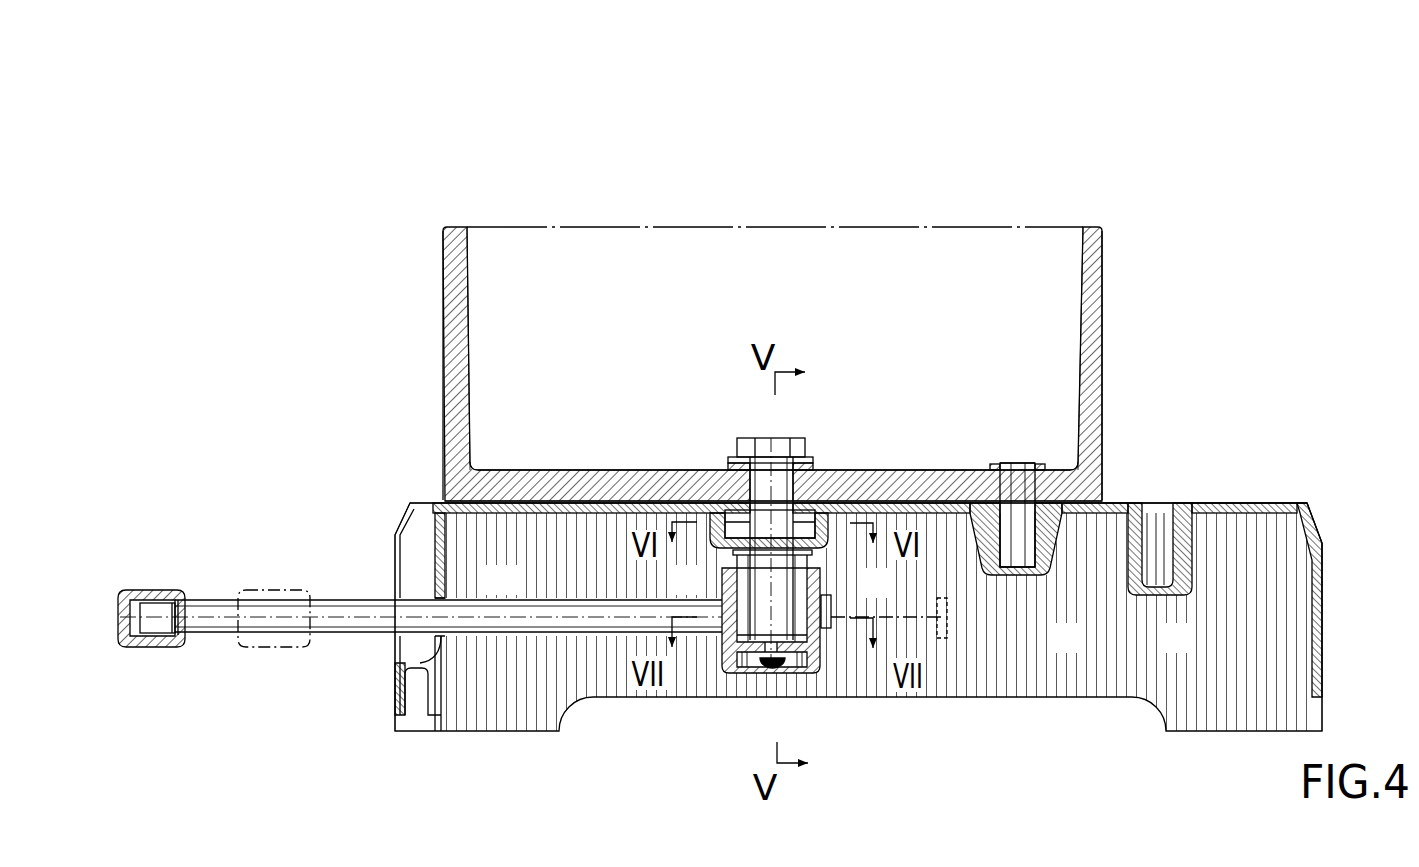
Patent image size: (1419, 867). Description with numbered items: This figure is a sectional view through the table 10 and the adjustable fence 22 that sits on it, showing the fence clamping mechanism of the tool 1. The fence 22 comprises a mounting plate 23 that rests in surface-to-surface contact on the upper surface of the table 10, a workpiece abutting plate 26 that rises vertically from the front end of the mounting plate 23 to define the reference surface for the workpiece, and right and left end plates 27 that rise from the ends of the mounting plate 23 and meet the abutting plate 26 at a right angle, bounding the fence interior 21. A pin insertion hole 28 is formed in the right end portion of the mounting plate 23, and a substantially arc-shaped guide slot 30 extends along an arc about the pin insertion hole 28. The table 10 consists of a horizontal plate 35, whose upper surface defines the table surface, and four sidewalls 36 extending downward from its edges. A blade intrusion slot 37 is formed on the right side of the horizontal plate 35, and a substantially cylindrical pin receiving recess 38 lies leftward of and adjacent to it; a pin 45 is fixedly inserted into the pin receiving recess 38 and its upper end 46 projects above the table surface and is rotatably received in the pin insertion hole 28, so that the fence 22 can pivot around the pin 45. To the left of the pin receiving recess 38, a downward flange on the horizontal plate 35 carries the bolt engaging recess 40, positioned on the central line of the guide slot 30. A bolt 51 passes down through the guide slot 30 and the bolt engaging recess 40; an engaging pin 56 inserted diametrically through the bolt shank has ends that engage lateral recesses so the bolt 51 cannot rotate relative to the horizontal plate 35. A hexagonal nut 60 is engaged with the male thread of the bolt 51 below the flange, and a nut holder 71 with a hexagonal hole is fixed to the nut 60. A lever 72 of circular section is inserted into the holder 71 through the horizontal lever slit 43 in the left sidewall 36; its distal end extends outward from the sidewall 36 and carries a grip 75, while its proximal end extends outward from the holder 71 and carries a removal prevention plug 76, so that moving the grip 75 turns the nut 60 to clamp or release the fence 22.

The apparatus 1 is at (1322, 438).
The table 10 is at (1325, 535).
The container interior 21 is at (1130, 392).
The adjustable fence 22 is at (1103, 272).
The mounting plate 23 is at (555, 470).
The workpiece abutting plate 26 is at (905, 255).
The end plates 27 is at (450, 300).
The pin insertion hole 28 is at (1022, 462).
The guide slot 30 is at (755, 453).
The horizontal plate 35 is at (1240, 503).
The sidewalls 36 is at (435, 553).
The blade intrusion slot 37 is at (1173, 572).
The pin receiving recess 38 is at (1032, 550).
The bolt engaging recess 40 is at (820, 468).
The lever slit 43 is at (438, 593).
The pin 45 is at (1013, 560).
The bolt head 46 is at (1003, 465).
The bolt 51 is at (793, 440).
The engaging pin 56 is at (735, 527).
The hexagonal nut 60 is at (727, 658).
The nut holder 71 is at (817, 673).
The lever 72 is at (350, 608).
The grip 75 is at (150, 590).
The removal prevention plug 76 is at (828, 612).